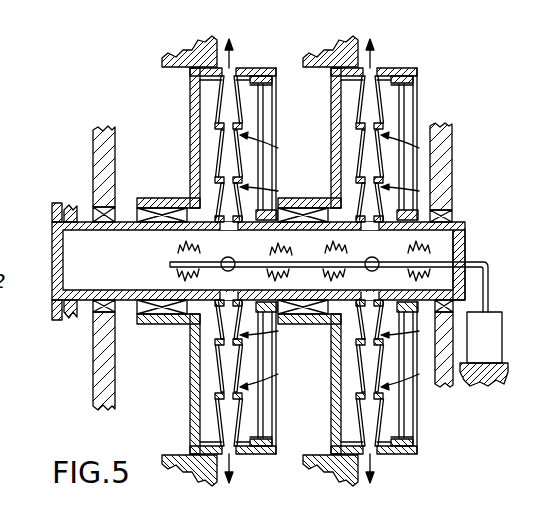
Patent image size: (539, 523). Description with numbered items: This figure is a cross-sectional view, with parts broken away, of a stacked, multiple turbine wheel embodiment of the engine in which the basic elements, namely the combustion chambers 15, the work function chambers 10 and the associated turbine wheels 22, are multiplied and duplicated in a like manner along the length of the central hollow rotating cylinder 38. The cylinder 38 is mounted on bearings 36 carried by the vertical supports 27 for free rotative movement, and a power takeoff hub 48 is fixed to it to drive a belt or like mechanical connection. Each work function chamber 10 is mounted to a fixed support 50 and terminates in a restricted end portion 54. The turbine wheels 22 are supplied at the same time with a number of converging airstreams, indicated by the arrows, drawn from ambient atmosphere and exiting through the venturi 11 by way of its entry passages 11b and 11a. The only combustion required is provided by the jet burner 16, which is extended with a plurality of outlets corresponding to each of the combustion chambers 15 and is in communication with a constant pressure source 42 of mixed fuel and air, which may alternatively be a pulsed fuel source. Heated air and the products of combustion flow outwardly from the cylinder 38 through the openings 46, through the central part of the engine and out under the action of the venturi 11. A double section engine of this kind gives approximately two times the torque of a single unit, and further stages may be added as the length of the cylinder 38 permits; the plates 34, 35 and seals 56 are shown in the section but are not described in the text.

The work function chamber 10 is at (191, 99).
The venturi 11 is at (218, 112).
The nozzle element 11a is at (222, 418).
The entry passages 11b is at (220, 392).
The combustion chamber 15 is at (112, 266).
The jet burner 16 is at (444, 262).
The turbine wheel 22 is at (279, 108).
The vertical supports 27 is at (93, 152).
The cover plate 34 is at (416, 73).
The gasket plate 35 is at (414, 85).
The bearings 36 is at (92, 211).
The central hollow rotating cylinder 38 is at (471, 218).
The constant pressure source 42 is at (494, 348).
The openings 46 is at (240, 238).
The power takeoff hub 48 is at (52, 216).
The fixed support 50 is at (221, 17).
The restricted end portion 54 is at (177, 199).
The seal 56 is at (137, 209).